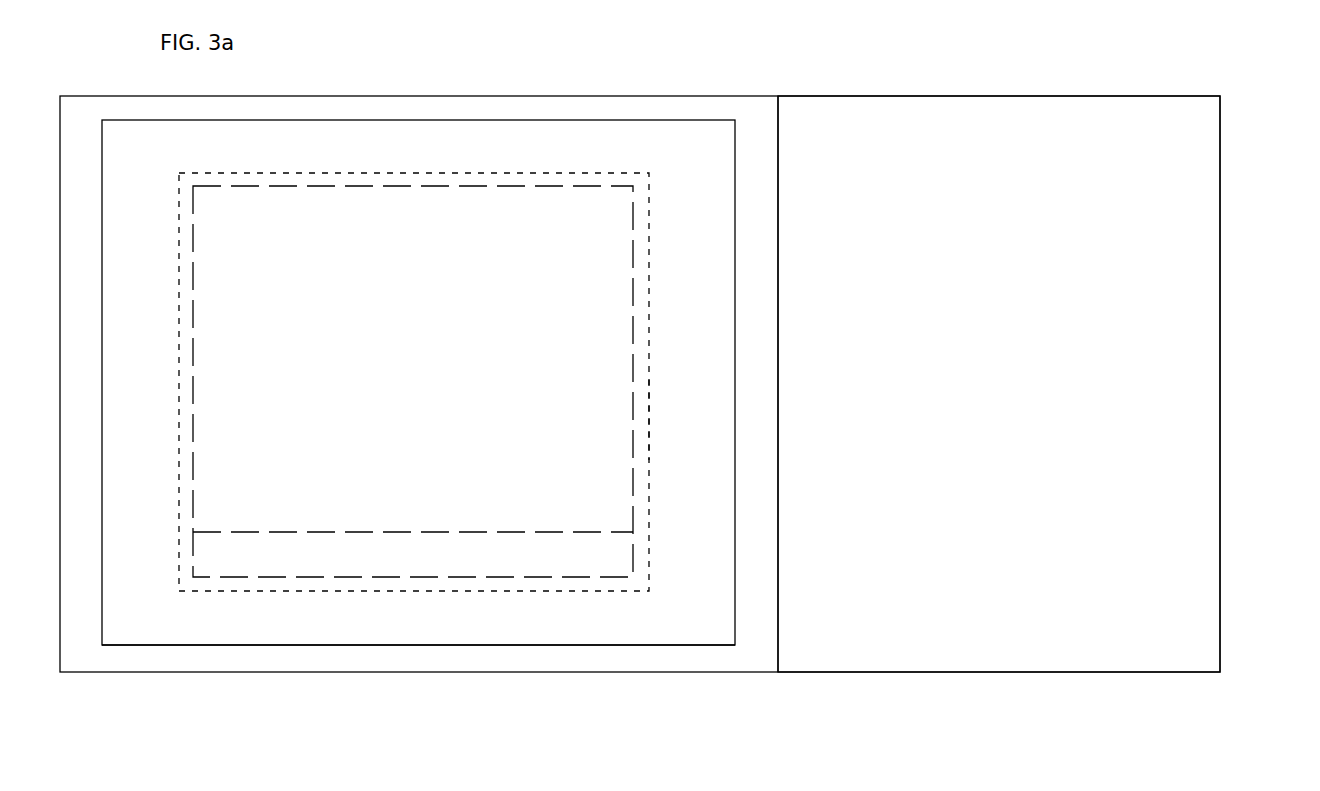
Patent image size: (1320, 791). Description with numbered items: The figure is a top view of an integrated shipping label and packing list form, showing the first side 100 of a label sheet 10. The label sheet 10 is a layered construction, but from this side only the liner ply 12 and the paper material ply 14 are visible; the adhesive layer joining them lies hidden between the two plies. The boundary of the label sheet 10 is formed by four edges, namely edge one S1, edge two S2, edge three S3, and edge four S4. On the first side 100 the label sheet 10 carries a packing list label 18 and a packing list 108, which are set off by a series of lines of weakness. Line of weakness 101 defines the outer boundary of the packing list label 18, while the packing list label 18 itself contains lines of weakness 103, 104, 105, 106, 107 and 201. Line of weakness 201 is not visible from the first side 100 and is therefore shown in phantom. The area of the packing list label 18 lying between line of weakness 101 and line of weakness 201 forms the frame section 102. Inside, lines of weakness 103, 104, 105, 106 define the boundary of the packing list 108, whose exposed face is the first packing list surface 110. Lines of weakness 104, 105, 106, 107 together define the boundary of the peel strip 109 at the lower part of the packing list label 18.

The label sheet 10 is at (858, 82).
The liner ply 12 is at (1163, 562).
The paper material ply 14 is at (663, 652).
The packing list label 18 is at (595, 180).
The first side 100 is at (687, 93).
The line of weakness 101 is at (734, 178).
The frame section 102 is at (215, 138).
The line of weakness 103 is at (501, 188).
The line of weakness 104 is at (195, 428).
The line of weakness 105 is at (633, 388).
The line of weakness 106 is at (457, 530).
The line of weakness 107 is at (452, 578).
The packing list 108 is at (396, 341).
The peel strip 109 is at (378, 558).
The first packing list surface 110 is at (287, 512).
The line of weakness 201 is at (653, 455).
The edge one S1 is at (1105, 93).
The edge two S2 is at (945, 673).
The edge three S3 is at (1222, 275).
The edge four S4 is at (63, 510).